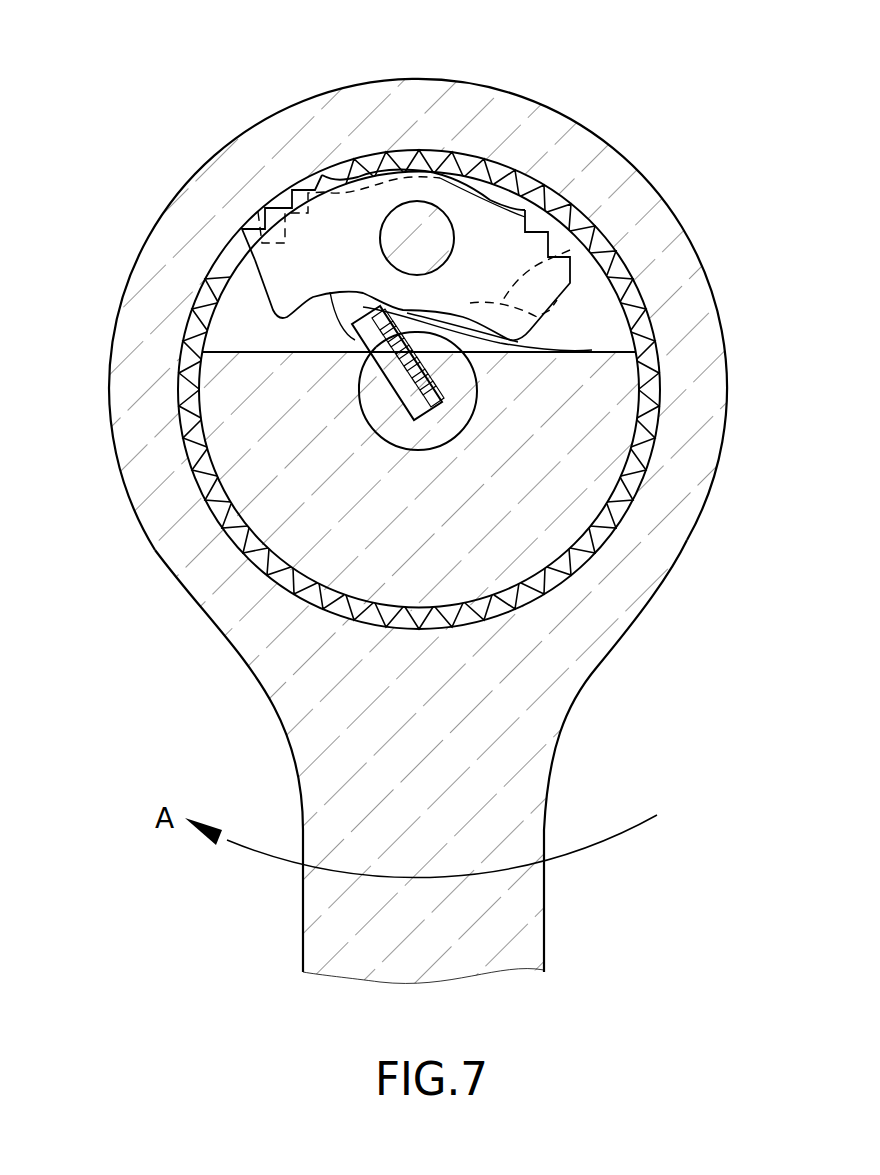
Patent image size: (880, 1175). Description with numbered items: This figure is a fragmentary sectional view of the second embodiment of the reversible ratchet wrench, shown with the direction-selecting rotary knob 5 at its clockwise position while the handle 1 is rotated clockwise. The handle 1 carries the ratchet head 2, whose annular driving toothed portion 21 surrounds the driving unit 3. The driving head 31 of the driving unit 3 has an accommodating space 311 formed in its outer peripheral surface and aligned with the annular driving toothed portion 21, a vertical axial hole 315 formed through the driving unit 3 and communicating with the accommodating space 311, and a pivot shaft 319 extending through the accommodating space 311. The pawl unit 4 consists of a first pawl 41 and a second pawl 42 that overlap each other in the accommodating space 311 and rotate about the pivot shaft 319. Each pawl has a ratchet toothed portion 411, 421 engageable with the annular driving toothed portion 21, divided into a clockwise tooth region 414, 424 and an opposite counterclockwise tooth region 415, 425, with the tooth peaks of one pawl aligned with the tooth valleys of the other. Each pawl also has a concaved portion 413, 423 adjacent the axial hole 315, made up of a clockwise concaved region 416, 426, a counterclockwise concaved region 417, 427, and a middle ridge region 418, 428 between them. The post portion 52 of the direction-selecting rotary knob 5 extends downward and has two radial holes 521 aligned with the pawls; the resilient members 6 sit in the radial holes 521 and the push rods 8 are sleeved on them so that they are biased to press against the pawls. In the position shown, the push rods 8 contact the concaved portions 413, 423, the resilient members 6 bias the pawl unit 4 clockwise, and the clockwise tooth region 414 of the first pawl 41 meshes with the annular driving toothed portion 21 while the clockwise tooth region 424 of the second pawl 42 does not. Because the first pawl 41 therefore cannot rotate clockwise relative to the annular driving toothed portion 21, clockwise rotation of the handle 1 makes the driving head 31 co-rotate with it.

The handle 1 is at (558, 935).
The ratchet head 2 is at (110, 297).
The annular driving toothed portion 21 is at (568, 545).
The driving unit 3 is at (497, 389).
The driving head 31 is at (658, 379).
The accommodating space 311 is at (592, 333).
The axial hole 315 is at (477, 405).
The pivot shaft 319 is at (442, 205).
The pawl unit 4 is at (453, 177).
The first pawl 41 is at (453, 177).
The ratchet toothed portion 411 is at (248, 161).
The clockwise tooth region 414 is at (266, 215).
The concaved portion 413 is at (296, 176).
The clockwise concaved region 416 is at (337, 290).
The counterclockwise tooth region 415 is at (520, 205).
The counterclockwise concaved region 417 is at (575, 290).
The middle ridge region 418 is at (477, 378).
The second pawl 42 is at (297, 293).
The ratchet toothed portion 421 is at (665, 239).
The counterclockwise tooth region 425 is at (547, 218).
The concaved portion 423 is at (648, 268).
The counterclockwise concaved region 427 is at (570, 250).
The clockwise tooth region 424 is at (258, 212).
The clockwise concaved region 426 is at (345, 292).
The middle ridge region 428 is at (470, 351).
The direction-selecting rotary knob 5 is at (604, 430).
The post portion 52 is at (468, 452).
The radial holes 521 is at (396, 396).
The resilient members 6 is at (373, 434).
The push rods 8 is at (240, 363).